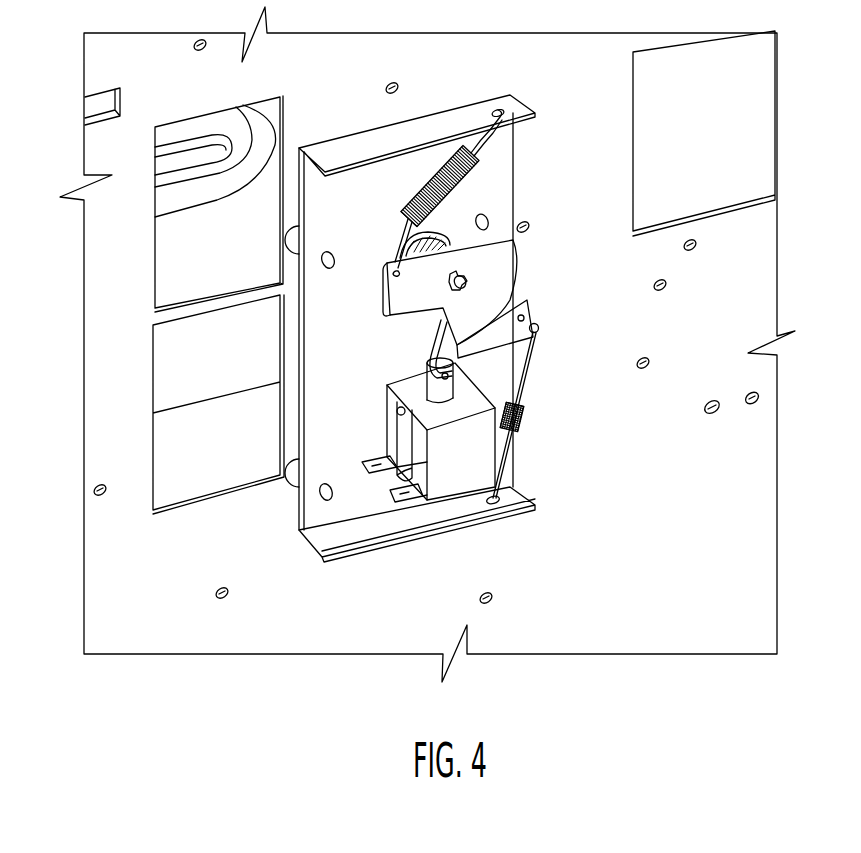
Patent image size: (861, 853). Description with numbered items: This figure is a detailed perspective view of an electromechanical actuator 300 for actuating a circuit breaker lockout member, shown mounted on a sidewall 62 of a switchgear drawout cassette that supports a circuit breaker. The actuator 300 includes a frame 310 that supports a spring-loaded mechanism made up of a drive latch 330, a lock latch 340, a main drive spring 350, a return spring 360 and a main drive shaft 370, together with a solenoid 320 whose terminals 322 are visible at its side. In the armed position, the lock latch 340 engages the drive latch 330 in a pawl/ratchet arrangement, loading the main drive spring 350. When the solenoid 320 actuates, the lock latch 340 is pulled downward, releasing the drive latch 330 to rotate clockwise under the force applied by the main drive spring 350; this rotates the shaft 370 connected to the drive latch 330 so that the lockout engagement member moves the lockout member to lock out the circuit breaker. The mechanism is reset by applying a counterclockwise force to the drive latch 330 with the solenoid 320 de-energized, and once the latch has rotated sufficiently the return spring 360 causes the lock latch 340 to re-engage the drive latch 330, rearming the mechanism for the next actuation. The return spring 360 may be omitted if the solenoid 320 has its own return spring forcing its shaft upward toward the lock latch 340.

The sidewall 62 is at (102, 410).
The actuator 300 is at (449, 329).
The frame 310 is at (400, 533).
The solenoid 320 is at (480, 457).
The solenoid terminals 322 is at (358, 458).
The drive latch 330 is at (505, 270).
The lock latch 340 is at (488, 338).
The main drive spring 350 is at (449, 188).
The return spring 360 is at (513, 418).
The main drive shaft 370 is at (407, 247).